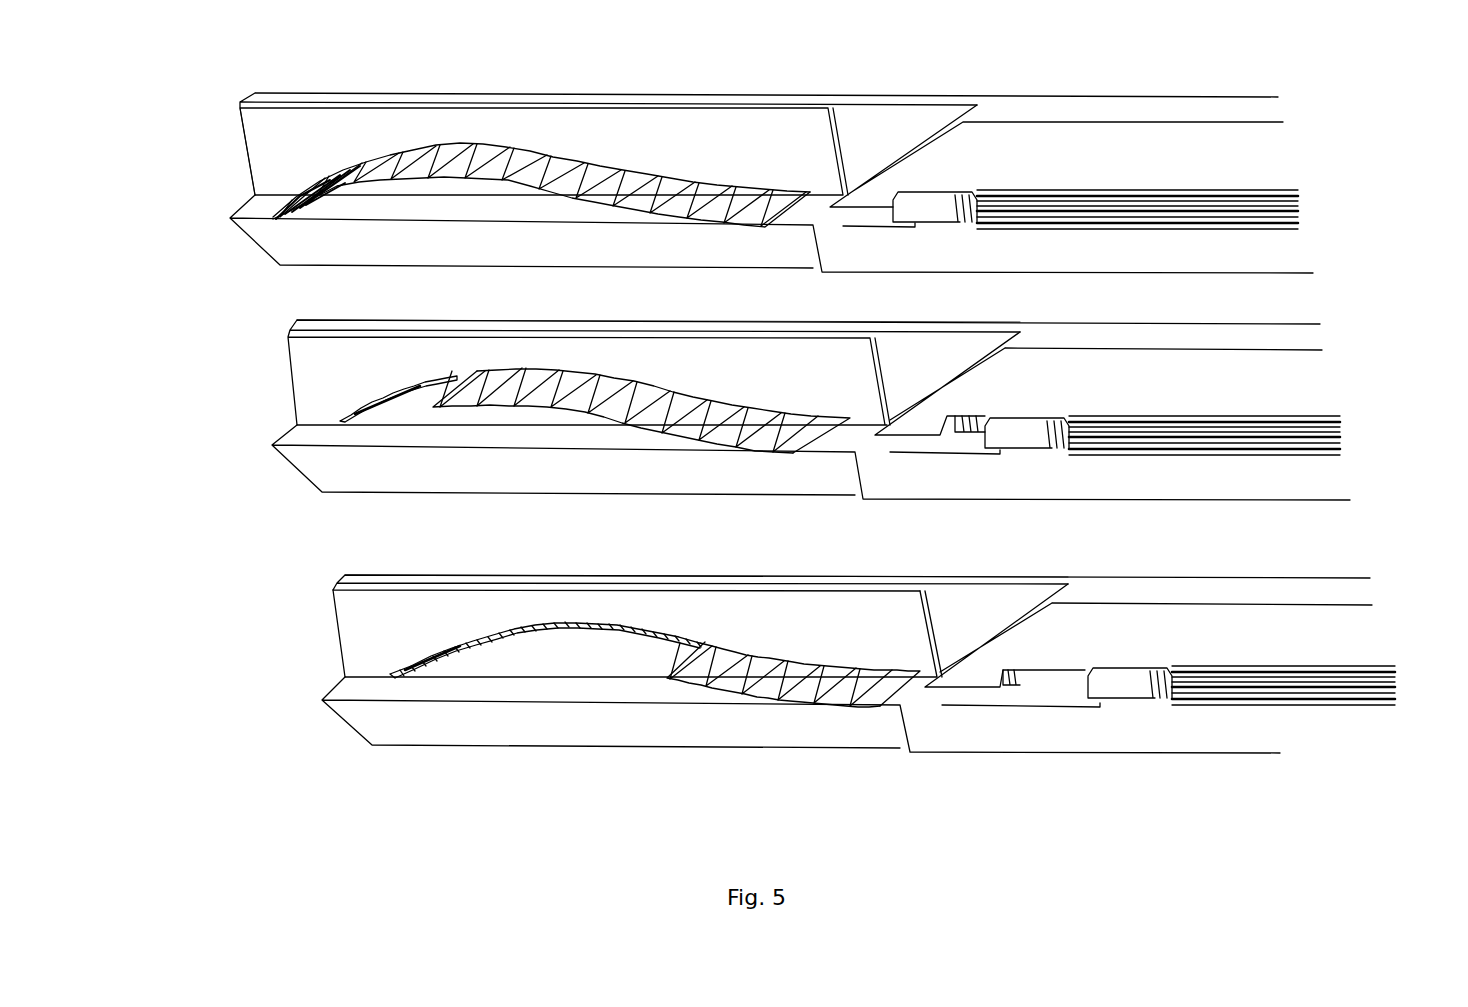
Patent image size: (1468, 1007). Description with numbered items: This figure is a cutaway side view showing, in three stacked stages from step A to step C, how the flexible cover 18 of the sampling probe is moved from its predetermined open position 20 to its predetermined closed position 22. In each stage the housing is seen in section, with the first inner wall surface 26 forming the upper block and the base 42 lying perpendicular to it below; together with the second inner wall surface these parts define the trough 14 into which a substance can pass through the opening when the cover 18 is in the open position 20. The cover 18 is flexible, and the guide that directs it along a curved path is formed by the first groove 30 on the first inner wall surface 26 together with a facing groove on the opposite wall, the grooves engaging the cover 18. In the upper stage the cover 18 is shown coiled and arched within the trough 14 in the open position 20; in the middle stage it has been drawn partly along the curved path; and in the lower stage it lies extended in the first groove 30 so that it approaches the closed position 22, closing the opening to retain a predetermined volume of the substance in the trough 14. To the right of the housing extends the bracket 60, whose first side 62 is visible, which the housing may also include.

The trough 14 is at (240, 187).
The cover 18 is at (493, 145).
The open position 20 is at (693, 610).
The closed position 22 is at (298, 187).
The first inner wall surface 26 is at (243, 102).
The first groove 30 is at (548, 622).
The base 42 is at (230, 218).
The bracket 60 is at (1295, 198).
The first side 62 is at (320, 322).